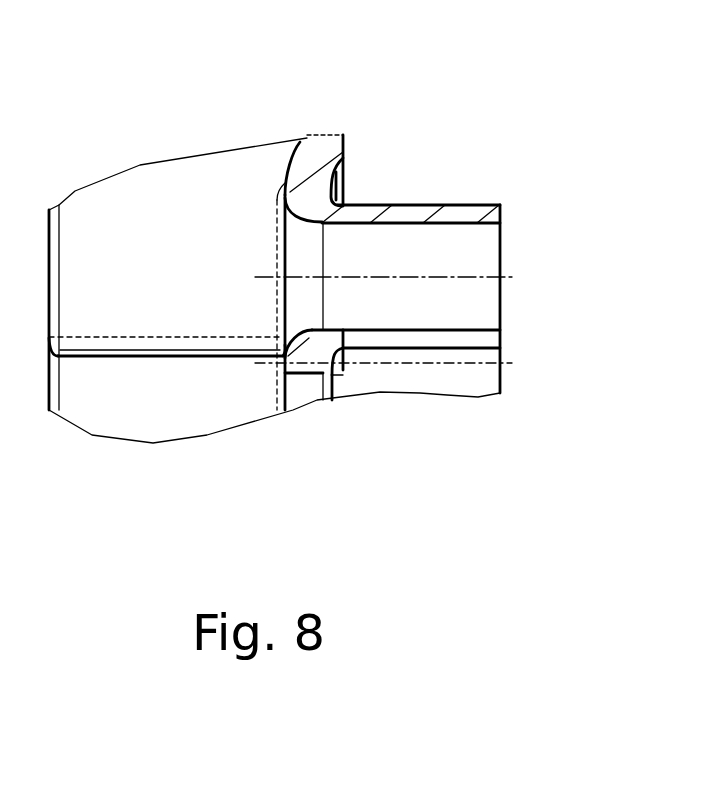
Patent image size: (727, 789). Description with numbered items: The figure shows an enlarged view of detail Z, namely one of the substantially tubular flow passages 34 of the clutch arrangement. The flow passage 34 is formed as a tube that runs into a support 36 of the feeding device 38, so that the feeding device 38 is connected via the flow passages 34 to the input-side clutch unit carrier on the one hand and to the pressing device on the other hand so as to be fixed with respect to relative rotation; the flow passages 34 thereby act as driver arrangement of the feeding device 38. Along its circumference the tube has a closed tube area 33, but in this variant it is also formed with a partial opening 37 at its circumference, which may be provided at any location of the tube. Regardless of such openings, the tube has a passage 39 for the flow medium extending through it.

The detail portion Z is at (185, 136).
The closed tube area 33 is at (455, 215).
The flow passage 34 is at (496, 212).
The support 36 is at (312, 157).
The partial opening 37 is at (442, 337).
The feeding device 38 is at (380, 172).
The passage 39 is at (438, 260).